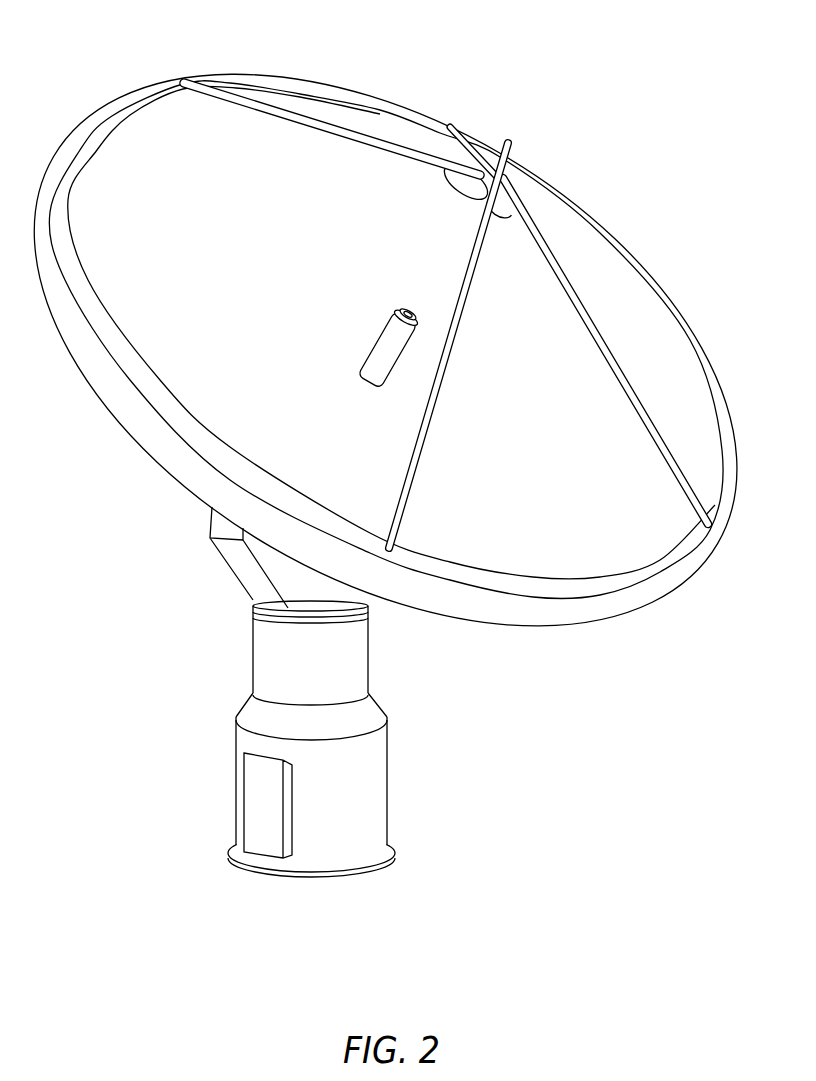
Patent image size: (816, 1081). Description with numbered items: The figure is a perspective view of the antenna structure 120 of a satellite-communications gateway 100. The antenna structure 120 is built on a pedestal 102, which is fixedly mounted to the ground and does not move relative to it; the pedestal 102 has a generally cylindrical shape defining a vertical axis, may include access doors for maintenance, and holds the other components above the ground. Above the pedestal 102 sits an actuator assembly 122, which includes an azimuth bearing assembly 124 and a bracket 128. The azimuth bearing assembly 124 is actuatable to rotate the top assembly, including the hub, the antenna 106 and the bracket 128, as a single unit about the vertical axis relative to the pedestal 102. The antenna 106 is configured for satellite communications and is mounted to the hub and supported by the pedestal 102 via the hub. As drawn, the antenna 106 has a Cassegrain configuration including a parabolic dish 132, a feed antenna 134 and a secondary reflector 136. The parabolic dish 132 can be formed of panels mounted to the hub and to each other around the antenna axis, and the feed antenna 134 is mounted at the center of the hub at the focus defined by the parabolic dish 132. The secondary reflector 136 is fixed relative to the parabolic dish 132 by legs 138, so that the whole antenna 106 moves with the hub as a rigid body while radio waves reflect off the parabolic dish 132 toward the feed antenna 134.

The satellite-communications gateway 100 is at (408, 438).
The pedestal 102 is at (367, 790).
The antenna 106 is at (693, 319).
The antenna structure 120 is at (284, 692).
The actuator assembly 122 is at (221, 566).
The azimuth bearing assembly 124 is at (344, 612).
The bracket 128 is at (289, 566).
The parabolic dish 132 is at (610, 293).
The feed antenna 134 is at (366, 338).
The secondary reflector 136 is at (446, 195).
The legs 138 is at (370, 128).